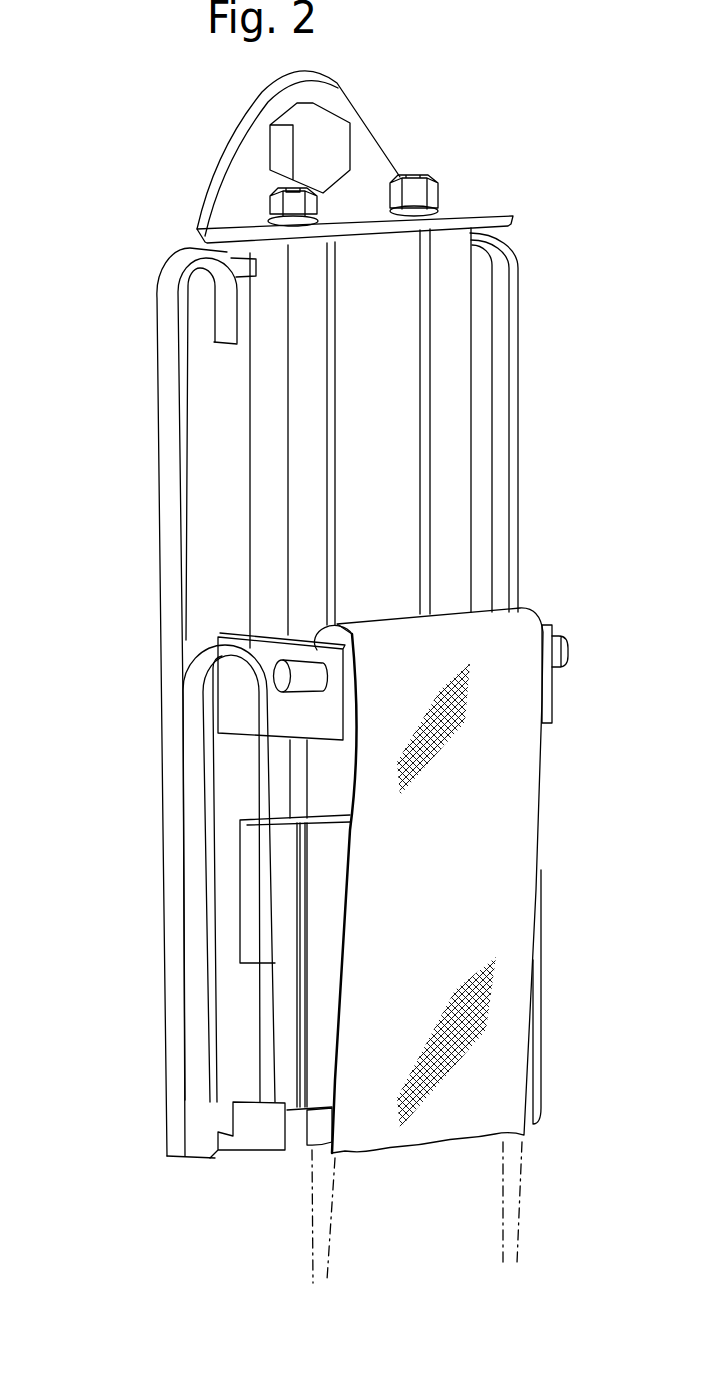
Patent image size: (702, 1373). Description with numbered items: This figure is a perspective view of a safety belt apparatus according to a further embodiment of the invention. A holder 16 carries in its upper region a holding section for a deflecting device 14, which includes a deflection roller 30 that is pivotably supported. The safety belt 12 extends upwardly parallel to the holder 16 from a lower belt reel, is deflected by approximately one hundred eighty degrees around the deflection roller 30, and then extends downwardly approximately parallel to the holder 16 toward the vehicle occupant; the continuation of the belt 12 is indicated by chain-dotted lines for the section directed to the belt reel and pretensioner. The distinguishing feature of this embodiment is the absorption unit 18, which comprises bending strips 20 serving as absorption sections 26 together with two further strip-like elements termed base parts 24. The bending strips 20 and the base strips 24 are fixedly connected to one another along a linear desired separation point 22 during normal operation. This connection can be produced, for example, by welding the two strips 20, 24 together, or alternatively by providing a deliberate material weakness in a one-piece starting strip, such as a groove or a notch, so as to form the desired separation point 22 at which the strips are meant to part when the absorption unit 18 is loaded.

The safety belt 12 is at (512, 1023).
The deflecting device 14 is at (555, 598).
The holder 16 is at (230, 163).
The absorption unit 18 is at (73, 712).
The bending strips 20 is at (192, 873).
The desired separation point 22 is at (180, 807).
The base parts 24 is at (512, 417).
The absorption sections 26 is at (537, 938).
The deflection roller 30 is at (557, 647).